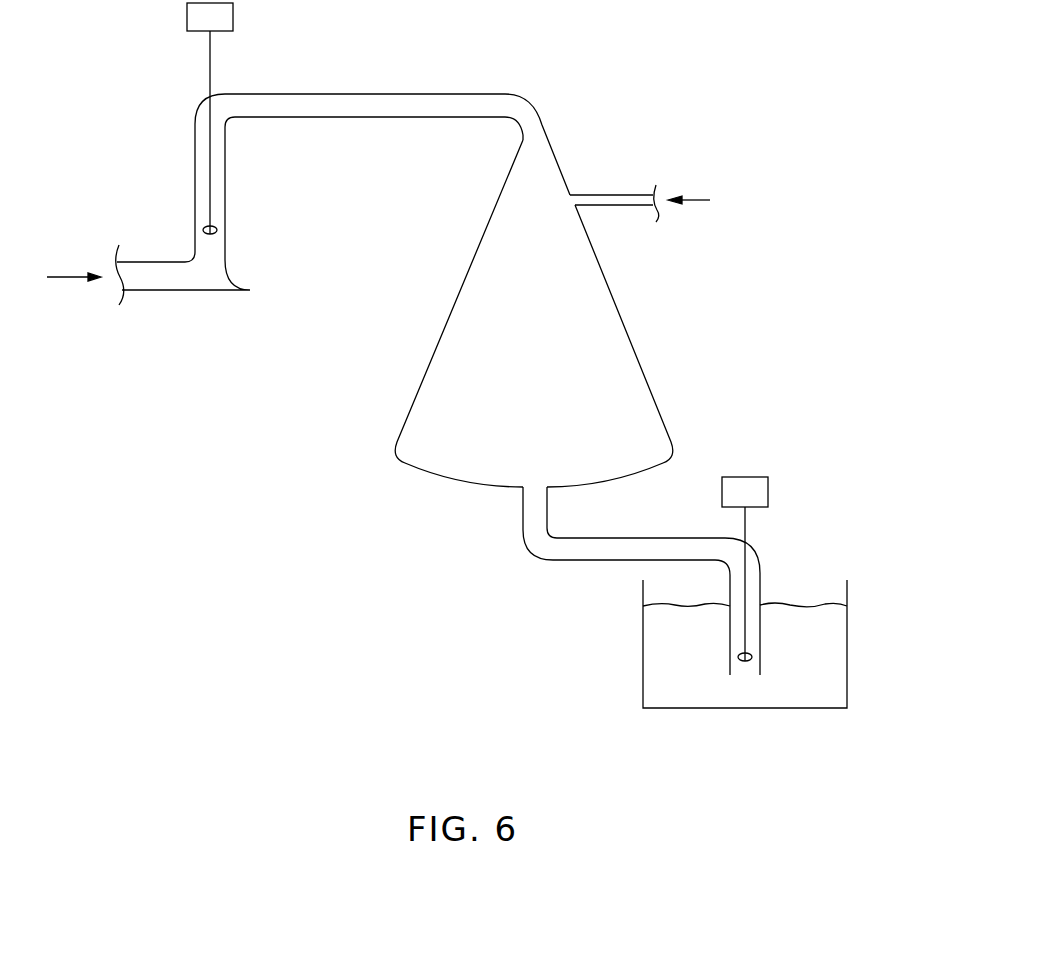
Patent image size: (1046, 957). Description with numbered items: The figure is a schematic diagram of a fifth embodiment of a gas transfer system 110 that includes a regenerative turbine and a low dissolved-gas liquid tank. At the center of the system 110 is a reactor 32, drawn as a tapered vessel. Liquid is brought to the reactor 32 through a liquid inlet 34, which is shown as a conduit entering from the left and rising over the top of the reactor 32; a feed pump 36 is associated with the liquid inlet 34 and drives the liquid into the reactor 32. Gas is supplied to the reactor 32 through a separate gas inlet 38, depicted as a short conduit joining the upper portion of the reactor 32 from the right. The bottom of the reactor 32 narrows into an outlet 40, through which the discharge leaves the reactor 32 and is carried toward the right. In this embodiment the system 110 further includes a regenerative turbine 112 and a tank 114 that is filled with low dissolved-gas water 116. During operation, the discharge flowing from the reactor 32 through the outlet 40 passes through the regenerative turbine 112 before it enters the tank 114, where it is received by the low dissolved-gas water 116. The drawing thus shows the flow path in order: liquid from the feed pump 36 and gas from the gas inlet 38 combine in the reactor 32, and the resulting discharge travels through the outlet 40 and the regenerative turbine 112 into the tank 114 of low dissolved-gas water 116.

The reactor 32 is at (628, 330).
The liquid inlet 34 is at (427, 94).
The feed pump 36 is at (233, 17).
The gas inlet 38 is at (610, 205).
The outlet 40 is at (560, 560).
The system 110 is at (258, 442).
The regenerative turbine 112 is at (768, 489).
The tank 114 is at (847, 623).
The low D.O. water 116 is at (787, 657).